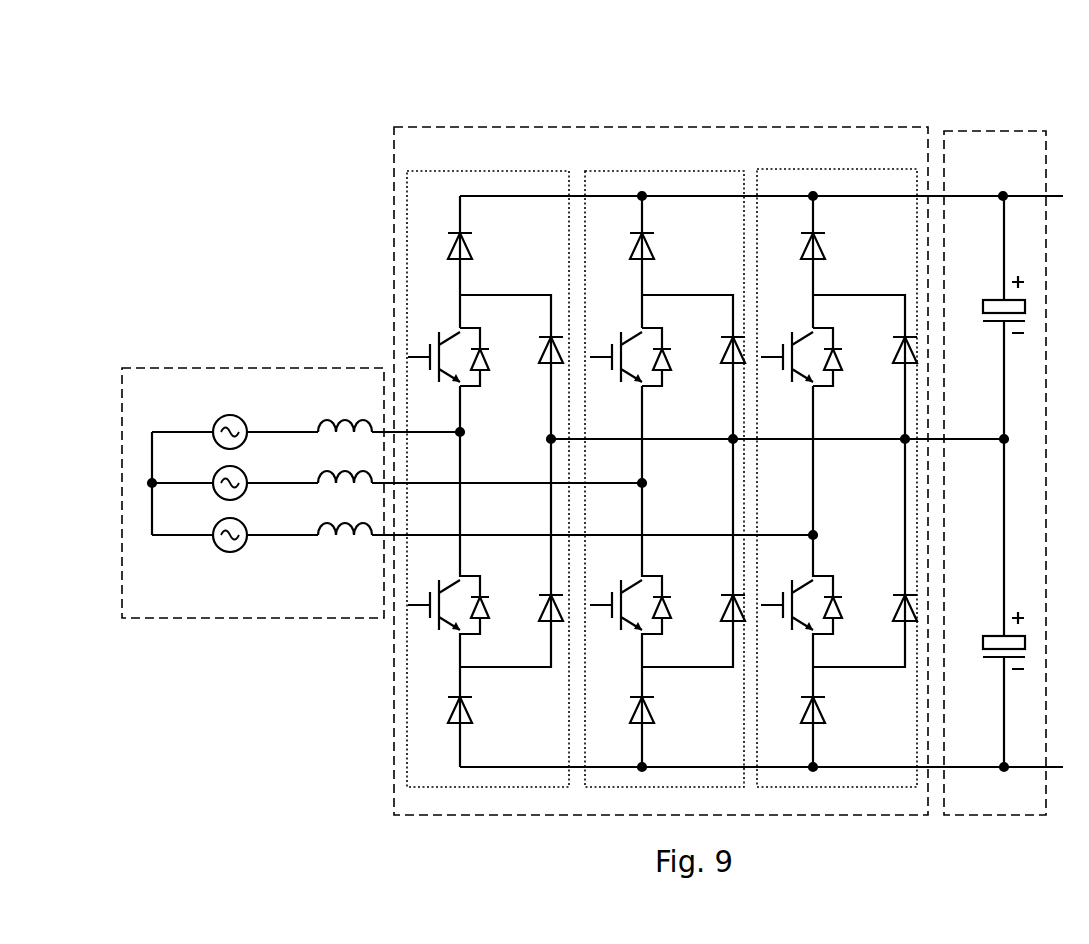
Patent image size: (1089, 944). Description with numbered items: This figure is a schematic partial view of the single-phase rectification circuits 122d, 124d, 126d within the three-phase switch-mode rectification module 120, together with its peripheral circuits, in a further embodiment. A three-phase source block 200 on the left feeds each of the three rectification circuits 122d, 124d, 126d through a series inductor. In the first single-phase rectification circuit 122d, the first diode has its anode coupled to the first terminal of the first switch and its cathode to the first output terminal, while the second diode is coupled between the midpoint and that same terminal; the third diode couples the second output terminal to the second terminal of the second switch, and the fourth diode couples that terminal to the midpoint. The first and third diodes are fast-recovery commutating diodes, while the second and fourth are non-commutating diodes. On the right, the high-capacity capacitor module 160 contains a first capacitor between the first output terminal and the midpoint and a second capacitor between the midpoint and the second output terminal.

The three-phase switch-mode rectification module 120 is at (553, 127).
The single-phase rectification circuit 122d is at (487, 173).
The single-phase rectification circuit 124d is at (667, 172).
The single-phase rectification circuit 126d is at (835, 168).
The high-capacity capacitor module 160 is at (982, 130).
The three-phase AC source with inductors 200 is at (307, 367).